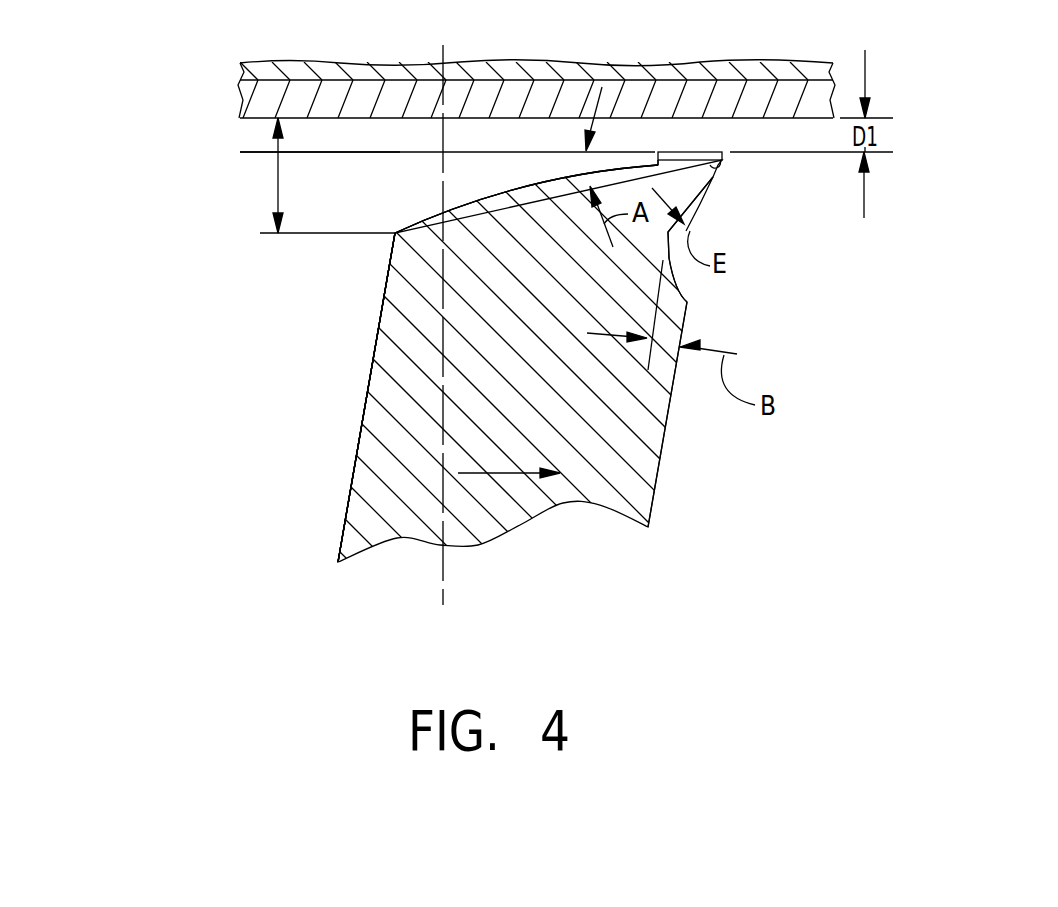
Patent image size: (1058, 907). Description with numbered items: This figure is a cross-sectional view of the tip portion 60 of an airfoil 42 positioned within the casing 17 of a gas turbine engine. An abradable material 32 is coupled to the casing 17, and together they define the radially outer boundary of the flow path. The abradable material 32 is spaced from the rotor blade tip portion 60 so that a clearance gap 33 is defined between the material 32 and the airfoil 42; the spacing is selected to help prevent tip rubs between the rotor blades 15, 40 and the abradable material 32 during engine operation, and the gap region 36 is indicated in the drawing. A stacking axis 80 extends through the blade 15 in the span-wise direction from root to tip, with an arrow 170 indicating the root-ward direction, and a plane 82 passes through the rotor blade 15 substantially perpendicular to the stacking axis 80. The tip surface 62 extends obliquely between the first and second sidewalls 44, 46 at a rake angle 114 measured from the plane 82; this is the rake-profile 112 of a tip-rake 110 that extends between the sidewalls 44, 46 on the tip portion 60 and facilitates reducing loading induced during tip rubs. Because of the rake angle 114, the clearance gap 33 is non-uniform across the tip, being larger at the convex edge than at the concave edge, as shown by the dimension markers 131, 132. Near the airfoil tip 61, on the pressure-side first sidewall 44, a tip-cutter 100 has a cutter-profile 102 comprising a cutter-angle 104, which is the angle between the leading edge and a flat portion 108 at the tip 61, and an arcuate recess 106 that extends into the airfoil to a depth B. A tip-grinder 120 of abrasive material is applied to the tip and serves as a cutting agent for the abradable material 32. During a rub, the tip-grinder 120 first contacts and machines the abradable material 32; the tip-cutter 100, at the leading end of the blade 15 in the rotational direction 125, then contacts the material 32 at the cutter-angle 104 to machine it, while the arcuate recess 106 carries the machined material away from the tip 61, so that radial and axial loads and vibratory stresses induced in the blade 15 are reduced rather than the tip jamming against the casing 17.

The rotor blade 15 is at (310, 492).
The casing 17 is at (290, 66).
The abradable material 32 is at (657, 92).
The clearance gap 33 is at (455, 133).
The tip clearance gap 36 is at (228, 142).
The rotor blade 40 is at (210, 448).
The airfoil 42 is at (622, 442).
The first sidewall 44 is at (663, 510).
The second sidewall 46 is at (358, 432).
The tip portion 60 is at (435, 278).
The airfoil tip 61 is at (391, 262).
The tip surface 62 is at (463, 210).
The stacking axis 80 is at (447, 573).
The plane 82 is at (258, 152).
The tip-cutter 100 is at (752, 287).
The cutter-profile 102 is at (665, 233).
The cutter-angle 104 is at (712, 232).
The arcuate recess 106 is at (679, 286).
The flat portion 108 is at (720, 163).
The tip-rake 110 is at (612, 155).
The rake-profile 112 is at (502, 205).
The rake angle 114 is at (583, 160).
The tip-grinder 120 is at (717, 153).
The rotational direction 125 is at (493, 473).
The tip height 131 is at (864, 202).
The tip depth 132 is at (278, 178).
The blade root direction 170 is at (172, 559).